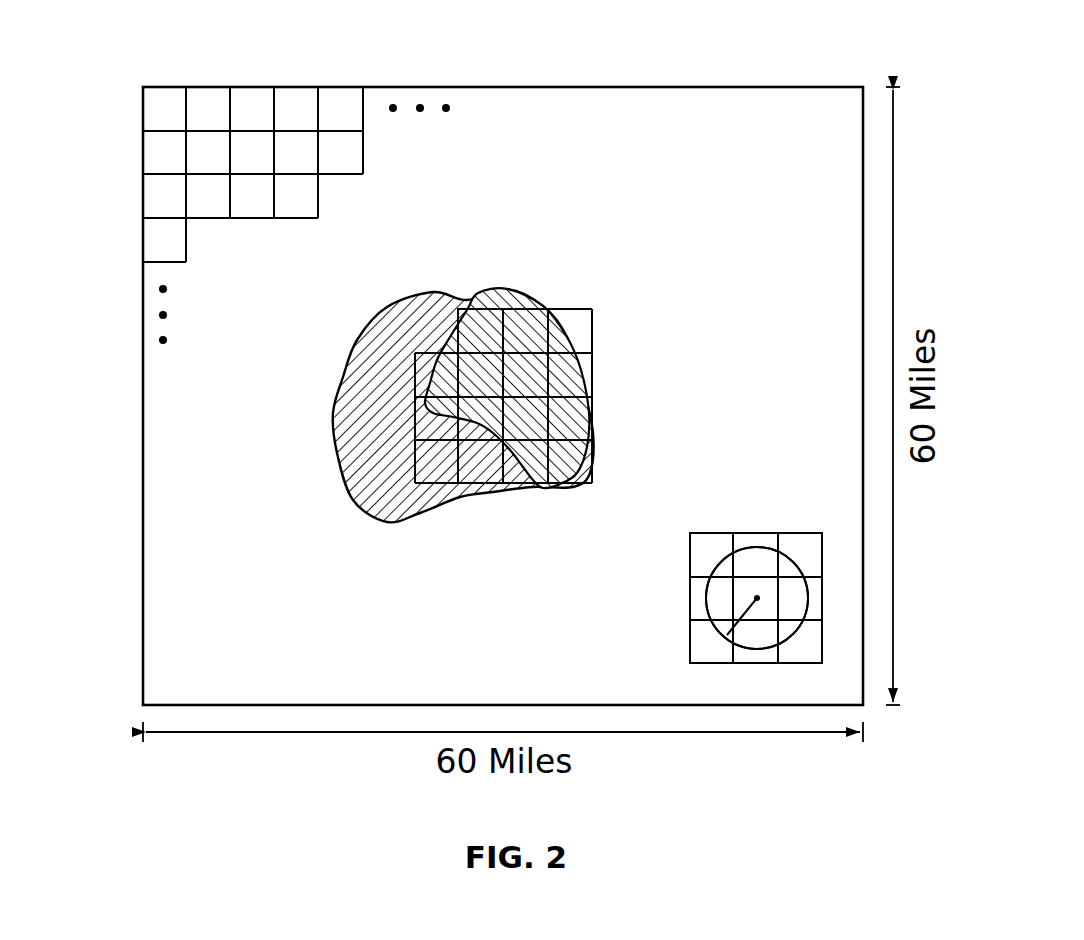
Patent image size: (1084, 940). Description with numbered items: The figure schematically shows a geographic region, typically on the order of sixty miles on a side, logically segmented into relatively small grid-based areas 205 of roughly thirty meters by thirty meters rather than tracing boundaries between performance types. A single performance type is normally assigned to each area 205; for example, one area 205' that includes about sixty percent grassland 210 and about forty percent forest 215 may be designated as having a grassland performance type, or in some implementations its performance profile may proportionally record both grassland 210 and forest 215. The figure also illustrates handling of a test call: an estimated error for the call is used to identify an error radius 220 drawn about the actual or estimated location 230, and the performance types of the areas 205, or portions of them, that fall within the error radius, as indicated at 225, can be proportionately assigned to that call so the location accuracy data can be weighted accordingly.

The area 205 is at (450, 331).
The area 205' is at (484, 296).
The grassland 210 is at (353, 347).
The forest 215 is at (528, 292).
The error radius 220 is at (737, 623).
The region within the error radius 225 is at (755, 548).
The actual or estimated location 230 is at (705, 598).